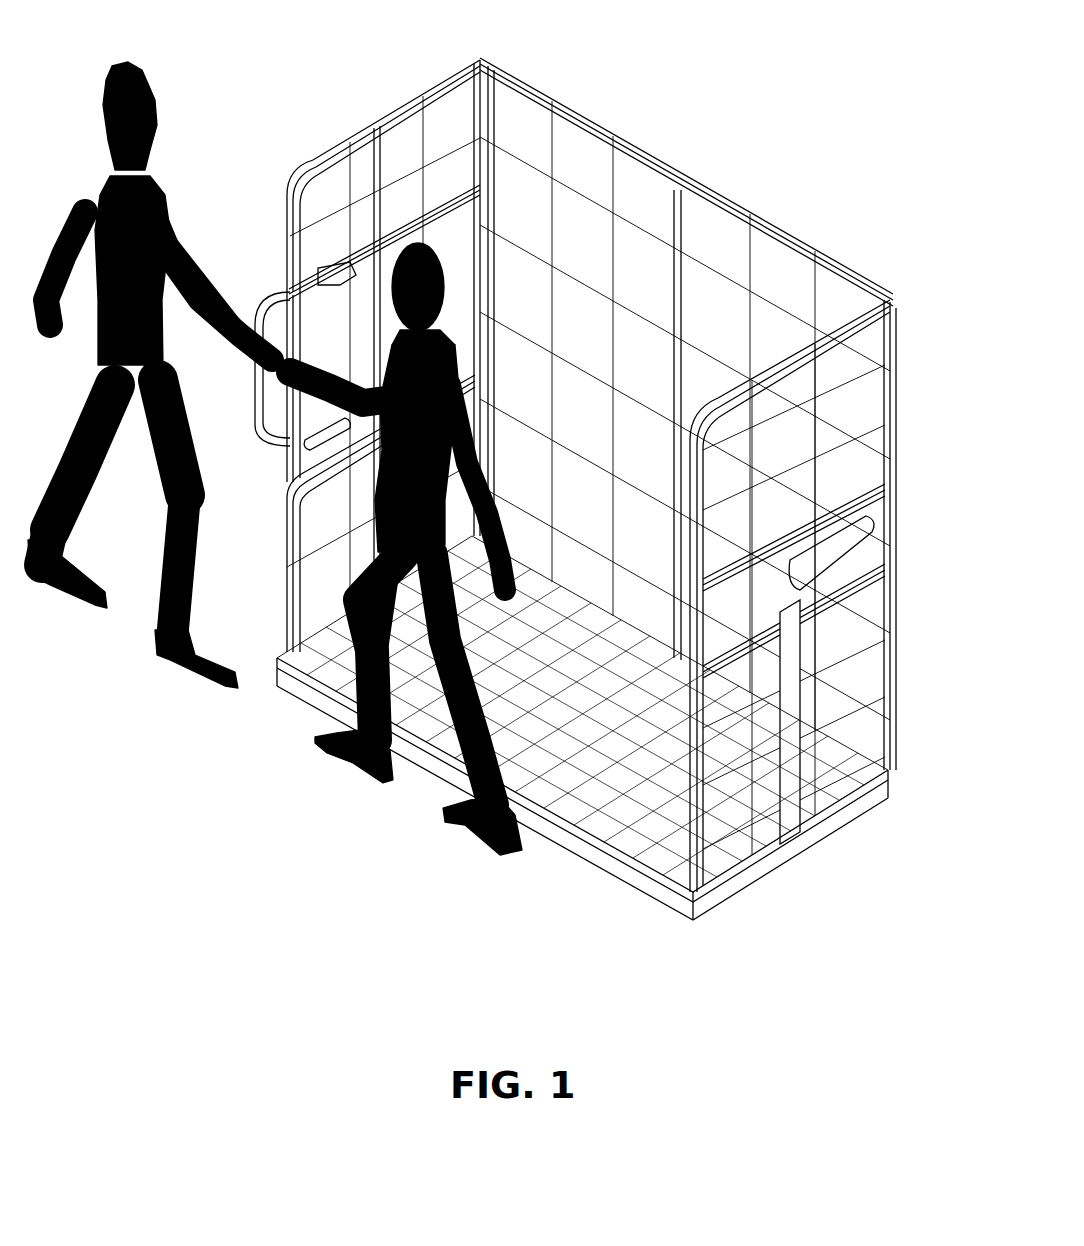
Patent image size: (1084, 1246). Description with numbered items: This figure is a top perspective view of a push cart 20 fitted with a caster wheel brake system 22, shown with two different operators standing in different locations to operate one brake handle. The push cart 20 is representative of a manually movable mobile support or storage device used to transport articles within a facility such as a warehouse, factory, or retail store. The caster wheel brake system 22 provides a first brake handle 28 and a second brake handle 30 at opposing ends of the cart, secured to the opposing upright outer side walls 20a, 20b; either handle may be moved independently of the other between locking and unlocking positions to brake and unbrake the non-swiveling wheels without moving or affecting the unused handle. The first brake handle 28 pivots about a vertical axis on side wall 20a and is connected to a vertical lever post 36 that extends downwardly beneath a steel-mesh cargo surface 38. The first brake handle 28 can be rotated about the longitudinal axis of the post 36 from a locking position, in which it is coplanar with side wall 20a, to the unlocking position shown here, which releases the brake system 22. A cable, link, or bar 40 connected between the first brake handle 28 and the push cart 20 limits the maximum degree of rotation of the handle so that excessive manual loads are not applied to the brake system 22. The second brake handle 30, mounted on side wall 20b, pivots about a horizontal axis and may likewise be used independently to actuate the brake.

The push cart 20 is at (570, 470).
The upright outer side wall 20a is at (272, 157).
The upright outer side wall 20b is at (902, 648).
The caster wheel brake system 22 is at (838, 848).
The first brake handle 28 is at (255, 305).
The second brake handle 30 is at (878, 524).
The vertical lever post 36 is at (392, 297).
The steel-mesh cargo surface 38 is at (520, 622).
The cable, link, or bar 40 is at (345, 425).